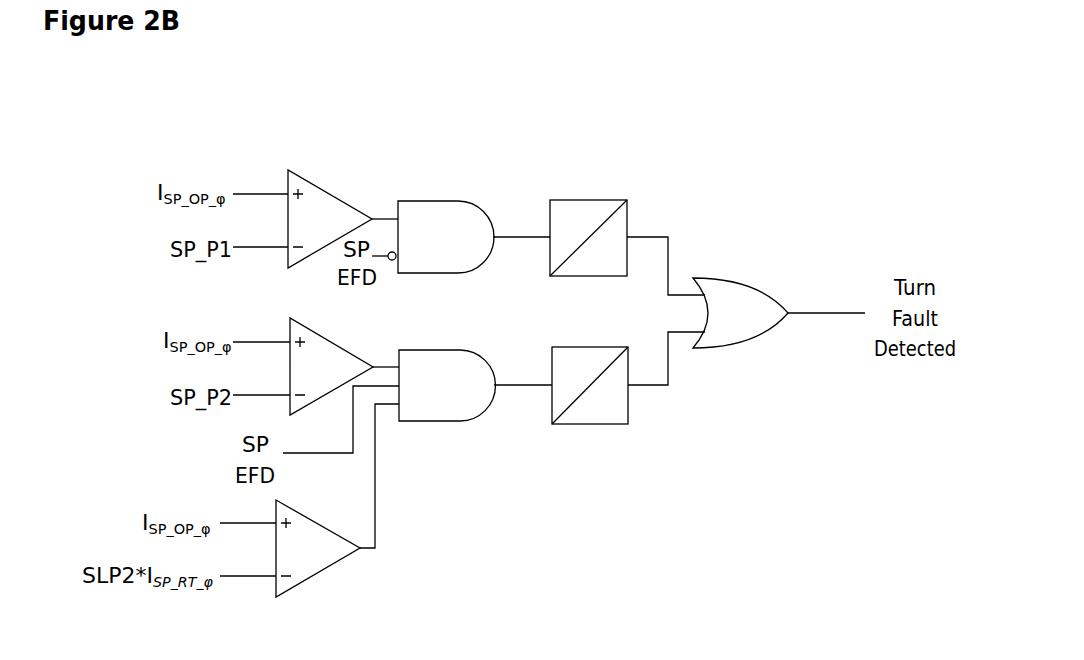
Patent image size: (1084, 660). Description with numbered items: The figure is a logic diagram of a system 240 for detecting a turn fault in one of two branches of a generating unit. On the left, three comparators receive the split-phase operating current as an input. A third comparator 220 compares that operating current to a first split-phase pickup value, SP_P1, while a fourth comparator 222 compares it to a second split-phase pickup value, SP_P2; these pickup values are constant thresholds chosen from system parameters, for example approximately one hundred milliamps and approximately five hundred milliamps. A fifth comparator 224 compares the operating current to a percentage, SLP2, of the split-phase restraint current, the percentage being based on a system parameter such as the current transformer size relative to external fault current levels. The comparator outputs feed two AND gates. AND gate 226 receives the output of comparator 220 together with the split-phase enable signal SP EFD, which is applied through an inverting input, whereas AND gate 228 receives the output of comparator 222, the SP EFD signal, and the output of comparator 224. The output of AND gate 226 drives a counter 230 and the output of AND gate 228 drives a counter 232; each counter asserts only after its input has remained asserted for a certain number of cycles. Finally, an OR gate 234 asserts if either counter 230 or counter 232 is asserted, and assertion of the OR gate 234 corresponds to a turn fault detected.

The system 240 is at (158, 126).
The third comparator 220 is at (342, 196).
The fourth comparator 222 is at (343, 343).
The fifth comparator 224 is at (330, 572).
The AND gate 226 is at (462, 201).
The AND gate 228 is at (462, 350).
The counter 230 is at (600, 200).
The counter 232 is at (598, 424).
The OR gate 234 is at (752, 281).